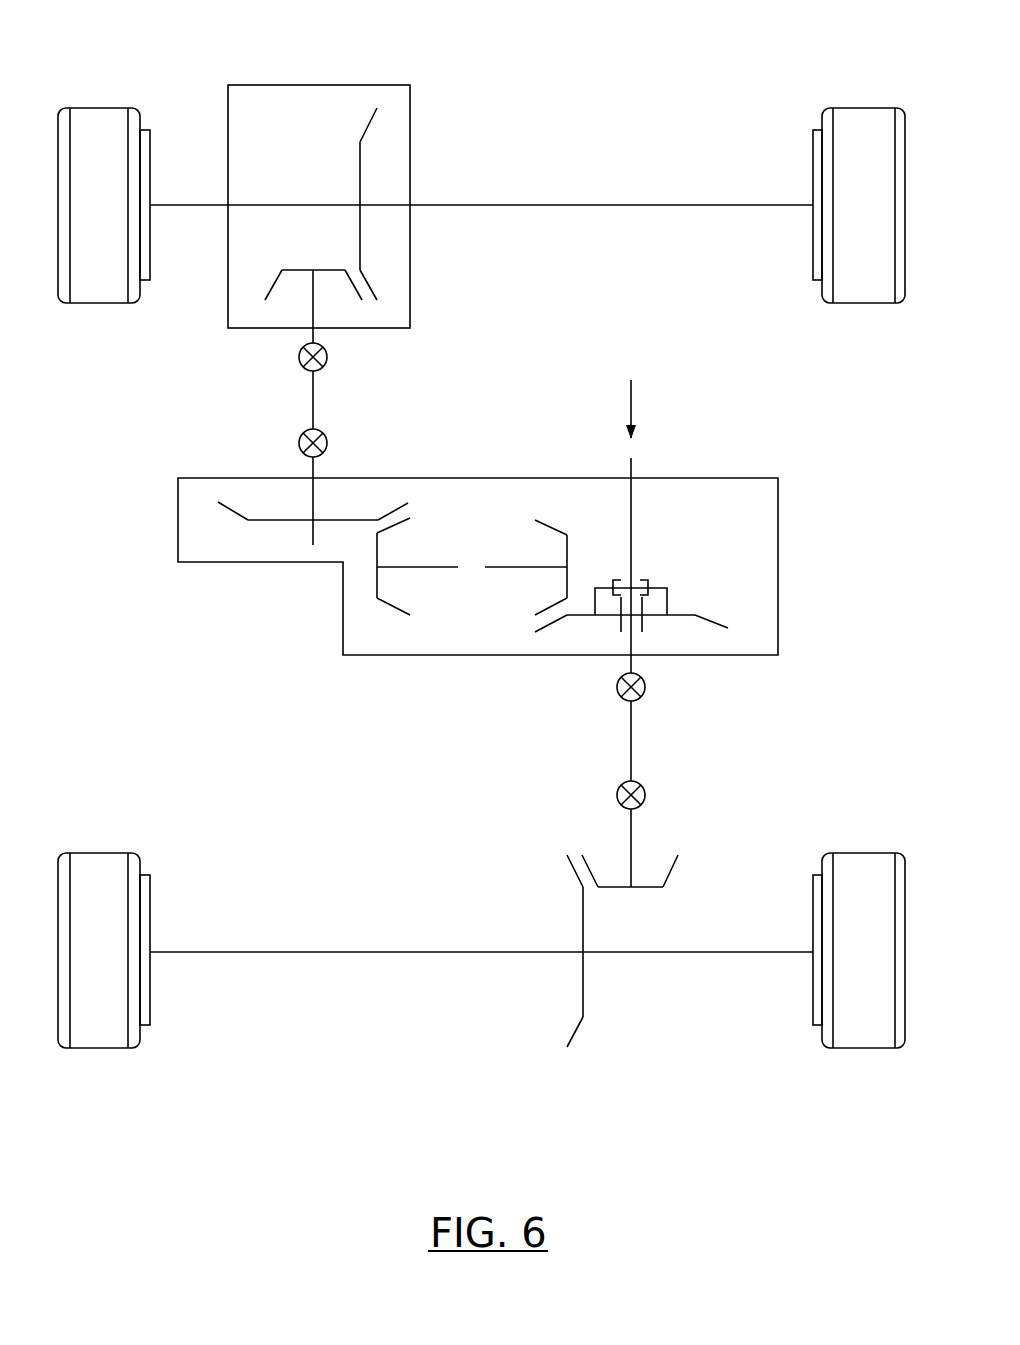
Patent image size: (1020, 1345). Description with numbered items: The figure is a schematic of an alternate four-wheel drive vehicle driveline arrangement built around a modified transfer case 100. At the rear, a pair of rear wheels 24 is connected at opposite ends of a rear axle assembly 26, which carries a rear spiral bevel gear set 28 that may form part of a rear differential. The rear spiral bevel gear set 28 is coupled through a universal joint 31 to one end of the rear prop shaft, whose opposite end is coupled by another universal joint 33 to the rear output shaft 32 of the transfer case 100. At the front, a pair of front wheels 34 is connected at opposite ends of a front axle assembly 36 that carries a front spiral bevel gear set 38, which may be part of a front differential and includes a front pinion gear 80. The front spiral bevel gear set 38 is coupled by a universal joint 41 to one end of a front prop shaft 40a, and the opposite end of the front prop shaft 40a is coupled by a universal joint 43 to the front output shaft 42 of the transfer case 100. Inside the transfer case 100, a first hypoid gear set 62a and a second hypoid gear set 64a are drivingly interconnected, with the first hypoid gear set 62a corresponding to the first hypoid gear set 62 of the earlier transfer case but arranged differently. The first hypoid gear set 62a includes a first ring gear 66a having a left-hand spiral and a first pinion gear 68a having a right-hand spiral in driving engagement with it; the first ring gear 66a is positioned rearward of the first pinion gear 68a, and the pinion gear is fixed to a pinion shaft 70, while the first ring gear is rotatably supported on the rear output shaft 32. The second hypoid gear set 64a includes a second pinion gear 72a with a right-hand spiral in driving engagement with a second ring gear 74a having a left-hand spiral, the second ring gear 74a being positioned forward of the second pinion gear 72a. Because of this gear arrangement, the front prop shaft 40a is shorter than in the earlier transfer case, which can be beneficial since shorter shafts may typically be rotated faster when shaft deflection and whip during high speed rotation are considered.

The rear wheels 24 is at (98, 1048).
The rear axle assembly 26 is at (307, 975).
The rear spiral bevel gear set 28 is at (570, 925).
The universal joint 31 is at (645, 795).
The rear output shaft 32 is at (631, 498).
The universal joint 33 is at (645, 690).
The front wheels 34 is at (100, 108).
The front axle assembly 36 is at (658, 216).
The front spiral bevel gear set 38 is at (384, 252).
The front prop shaft 40a is at (313, 405).
The universal joint 41 is at (328, 355).
The front output shaft 42 is at (313, 490).
The universal joint 43 is at (300, 440).
The first hypoid gear set 62 is at (531, 499).
The first hypoid gear set 62a is at (529, 634).
The second hypoid gear set 64a is at (421, 494).
The first ring gear 66a is at (724, 626).
The first pinion gear 68a is at (553, 518).
The pinion shaft 70 is at (502, 568).
The second pinion gear 72a is at (393, 605).
The second ring gear 74a is at (217, 503).
The front pinion gear 80 is at (290, 268).
The transfer case 100 is at (746, 462).